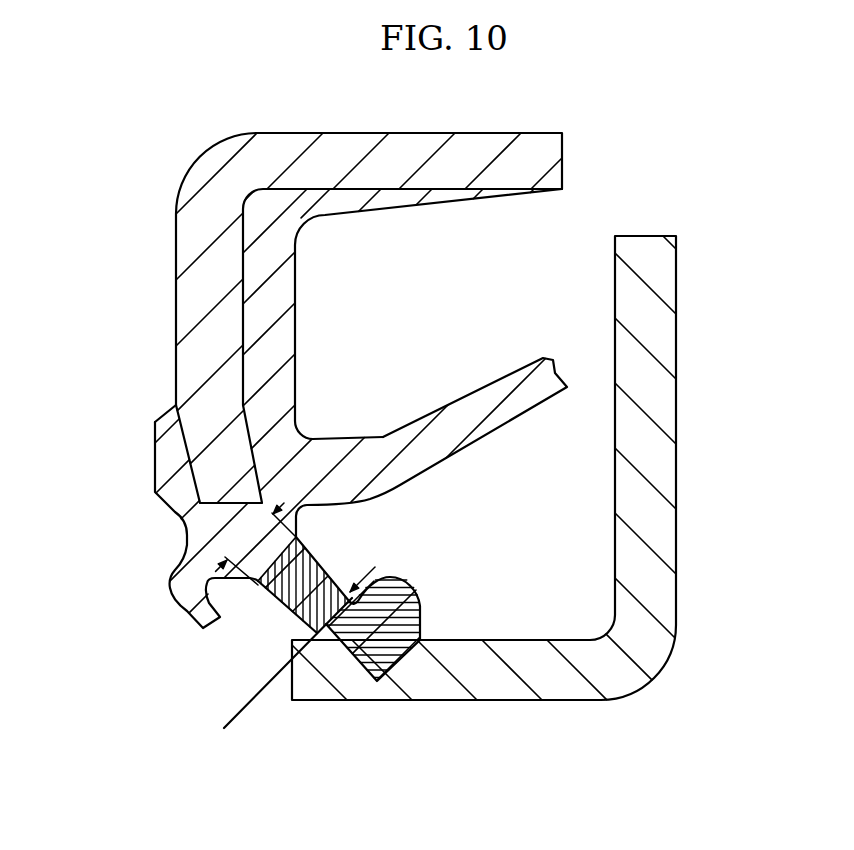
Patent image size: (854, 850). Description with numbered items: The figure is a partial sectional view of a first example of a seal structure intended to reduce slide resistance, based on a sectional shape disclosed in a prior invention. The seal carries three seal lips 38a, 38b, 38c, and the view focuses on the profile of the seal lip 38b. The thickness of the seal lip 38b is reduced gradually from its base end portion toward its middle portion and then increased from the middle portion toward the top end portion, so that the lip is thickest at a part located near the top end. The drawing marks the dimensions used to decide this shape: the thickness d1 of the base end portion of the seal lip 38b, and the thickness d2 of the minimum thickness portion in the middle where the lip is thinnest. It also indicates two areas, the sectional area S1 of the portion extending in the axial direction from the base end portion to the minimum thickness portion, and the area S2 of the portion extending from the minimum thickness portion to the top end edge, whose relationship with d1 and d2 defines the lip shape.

The seal lip 38a is at (506, 397).
The seal lip 38b is at (418, 587).
The seal lip 38c is at (198, 618).
The sectional area of portion from base end portion to minimum thickness portion S1 is at (258, 588).
The area of portion from minimum thickness portion to top end edge S2 is at (389, 652).
The thickness of base end portion of seal lip d1 is at (247, 537).
The thickness of minimum thickness portion d2 is at (347, 597).